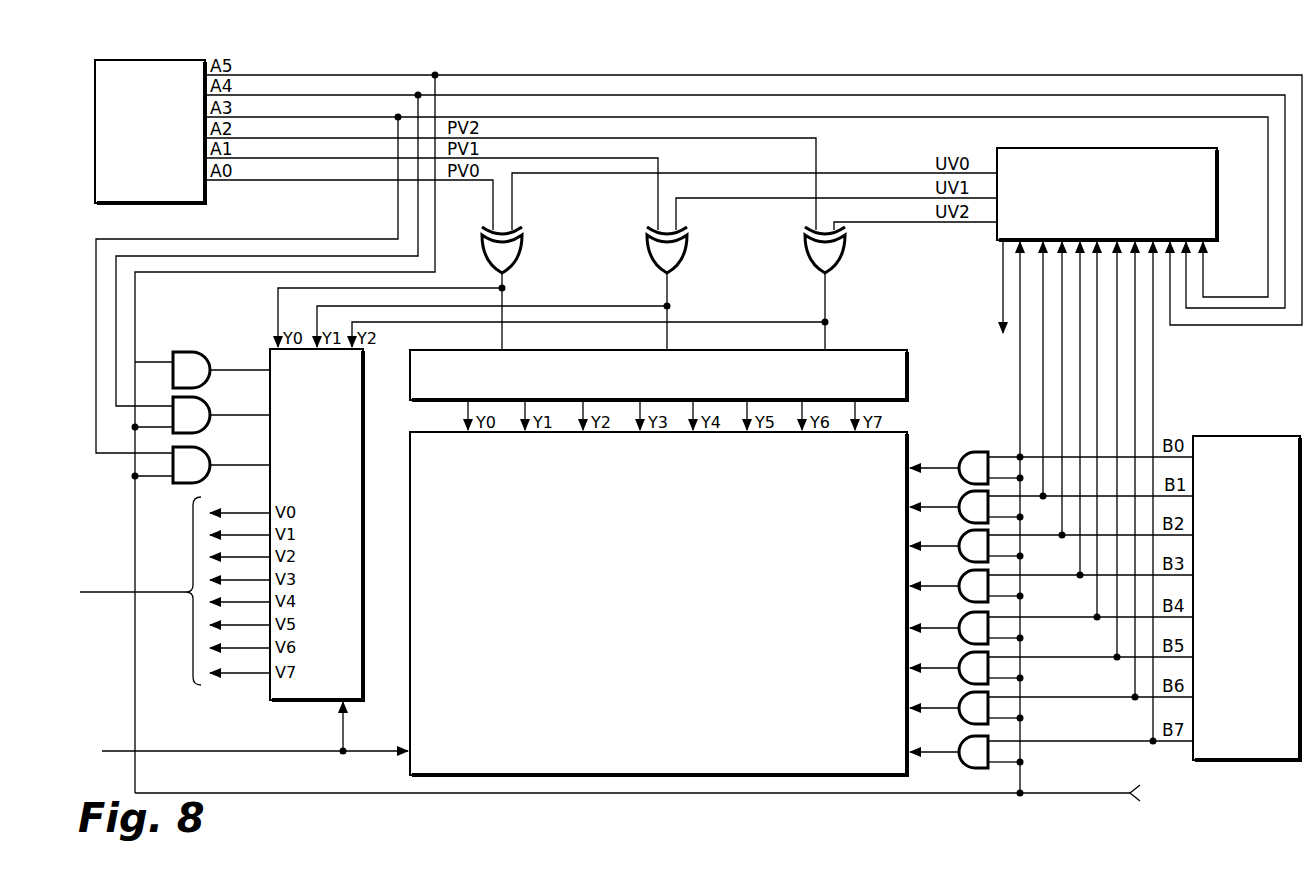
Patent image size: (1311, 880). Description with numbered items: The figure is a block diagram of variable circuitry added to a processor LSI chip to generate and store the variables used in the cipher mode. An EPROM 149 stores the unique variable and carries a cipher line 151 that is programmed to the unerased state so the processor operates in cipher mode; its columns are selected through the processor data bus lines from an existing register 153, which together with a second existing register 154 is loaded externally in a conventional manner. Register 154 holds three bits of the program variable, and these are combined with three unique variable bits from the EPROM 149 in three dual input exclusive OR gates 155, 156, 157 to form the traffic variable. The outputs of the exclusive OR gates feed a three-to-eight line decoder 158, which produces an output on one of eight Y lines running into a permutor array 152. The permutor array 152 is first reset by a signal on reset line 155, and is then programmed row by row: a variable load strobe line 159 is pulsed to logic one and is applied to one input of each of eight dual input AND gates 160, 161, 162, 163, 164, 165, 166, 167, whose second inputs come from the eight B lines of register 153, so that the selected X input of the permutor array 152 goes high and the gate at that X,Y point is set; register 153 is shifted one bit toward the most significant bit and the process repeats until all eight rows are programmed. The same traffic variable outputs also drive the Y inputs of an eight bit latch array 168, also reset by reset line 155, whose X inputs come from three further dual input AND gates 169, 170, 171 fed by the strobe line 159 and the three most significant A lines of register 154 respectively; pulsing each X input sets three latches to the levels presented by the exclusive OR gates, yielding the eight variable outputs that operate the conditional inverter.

The EPROM 149 is at (1107, 194).
The cipher line 151 is at (1003, 294).
The permutor array 152 is at (658, 603).
The register 153 is at (1246, 598).
The register 154 is at (150, 131).
The exclusive OR gate / reset line 155 is at (523, 253).
The exclusive OR gate 156 is at (688, 253).
The exclusive OR gate 157 is at (846, 253).
The 3-to-8 line decoder 158 is at (658, 375).
The variable load strobe line 159 is at (1076, 796).
The AND gate 160 is at (968, 736).
The AND gate 161 is at (968, 692).
The AND gate 162 is at (968, 652).
The AND gate 163 is at (968, 612).
The AND gate 164 is at (968, 570).
The AND gate 165 is at (968, 530).
The AND gate 166 is at (968, 491).
The AND gate 167 is at (972, 452).
The eight bit latch array 168 is at (316, 524).
The AND gate 169 is at (202, 336).
The AND gate 170 is at (207, 383).
The AND gate 171 is at (202, 433).